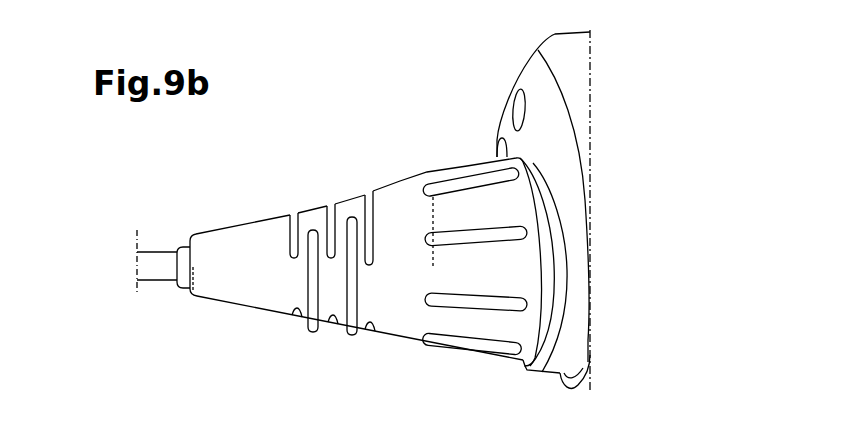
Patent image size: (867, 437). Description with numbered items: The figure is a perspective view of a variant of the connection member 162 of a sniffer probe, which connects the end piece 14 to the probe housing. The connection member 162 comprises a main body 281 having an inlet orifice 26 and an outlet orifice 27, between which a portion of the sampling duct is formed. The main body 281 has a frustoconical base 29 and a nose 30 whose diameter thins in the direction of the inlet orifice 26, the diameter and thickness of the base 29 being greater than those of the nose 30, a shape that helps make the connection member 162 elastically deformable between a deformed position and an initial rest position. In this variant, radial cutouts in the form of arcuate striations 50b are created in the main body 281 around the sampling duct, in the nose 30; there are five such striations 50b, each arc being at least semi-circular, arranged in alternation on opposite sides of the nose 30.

The connection member 162 is at (381, 100).
The frustoconical base 29 is at (468, 163).
The outlet orifice 27 is at (541, 230).
The inlet orifice 26 is at (195, 235).
The end piece 14 is at (160, 268).
The nose 30 is at (212, 302).
The main body 281 is at (245, 236).
The arcuate striation 50b is at (369, 212).